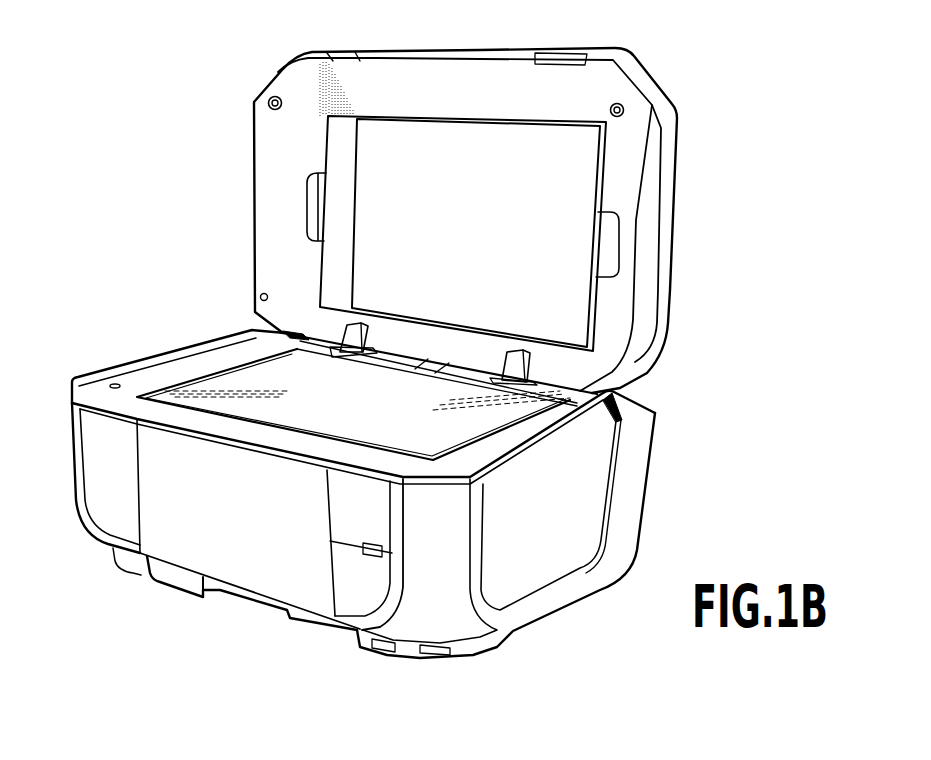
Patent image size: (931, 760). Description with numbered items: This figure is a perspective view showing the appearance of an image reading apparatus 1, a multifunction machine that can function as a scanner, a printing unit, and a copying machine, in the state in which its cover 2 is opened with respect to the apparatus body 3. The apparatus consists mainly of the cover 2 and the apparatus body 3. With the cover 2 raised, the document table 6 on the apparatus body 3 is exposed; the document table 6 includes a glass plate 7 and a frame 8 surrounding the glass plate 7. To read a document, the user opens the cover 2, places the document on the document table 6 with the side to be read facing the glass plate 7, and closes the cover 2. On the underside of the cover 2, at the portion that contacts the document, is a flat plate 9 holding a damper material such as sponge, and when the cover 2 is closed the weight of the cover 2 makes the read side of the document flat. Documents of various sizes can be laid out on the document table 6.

The image reading apparatus 1 is at (686, 102).
The cover 2 is at (485, 78).
The apparatus body 3 is at (628, 507).
The document table 6 is at (130, 347).
The glass plate 7 is at (303, 371).
The frame 8 is at (225, 350).
The flat plate 9 is at (548, 142).